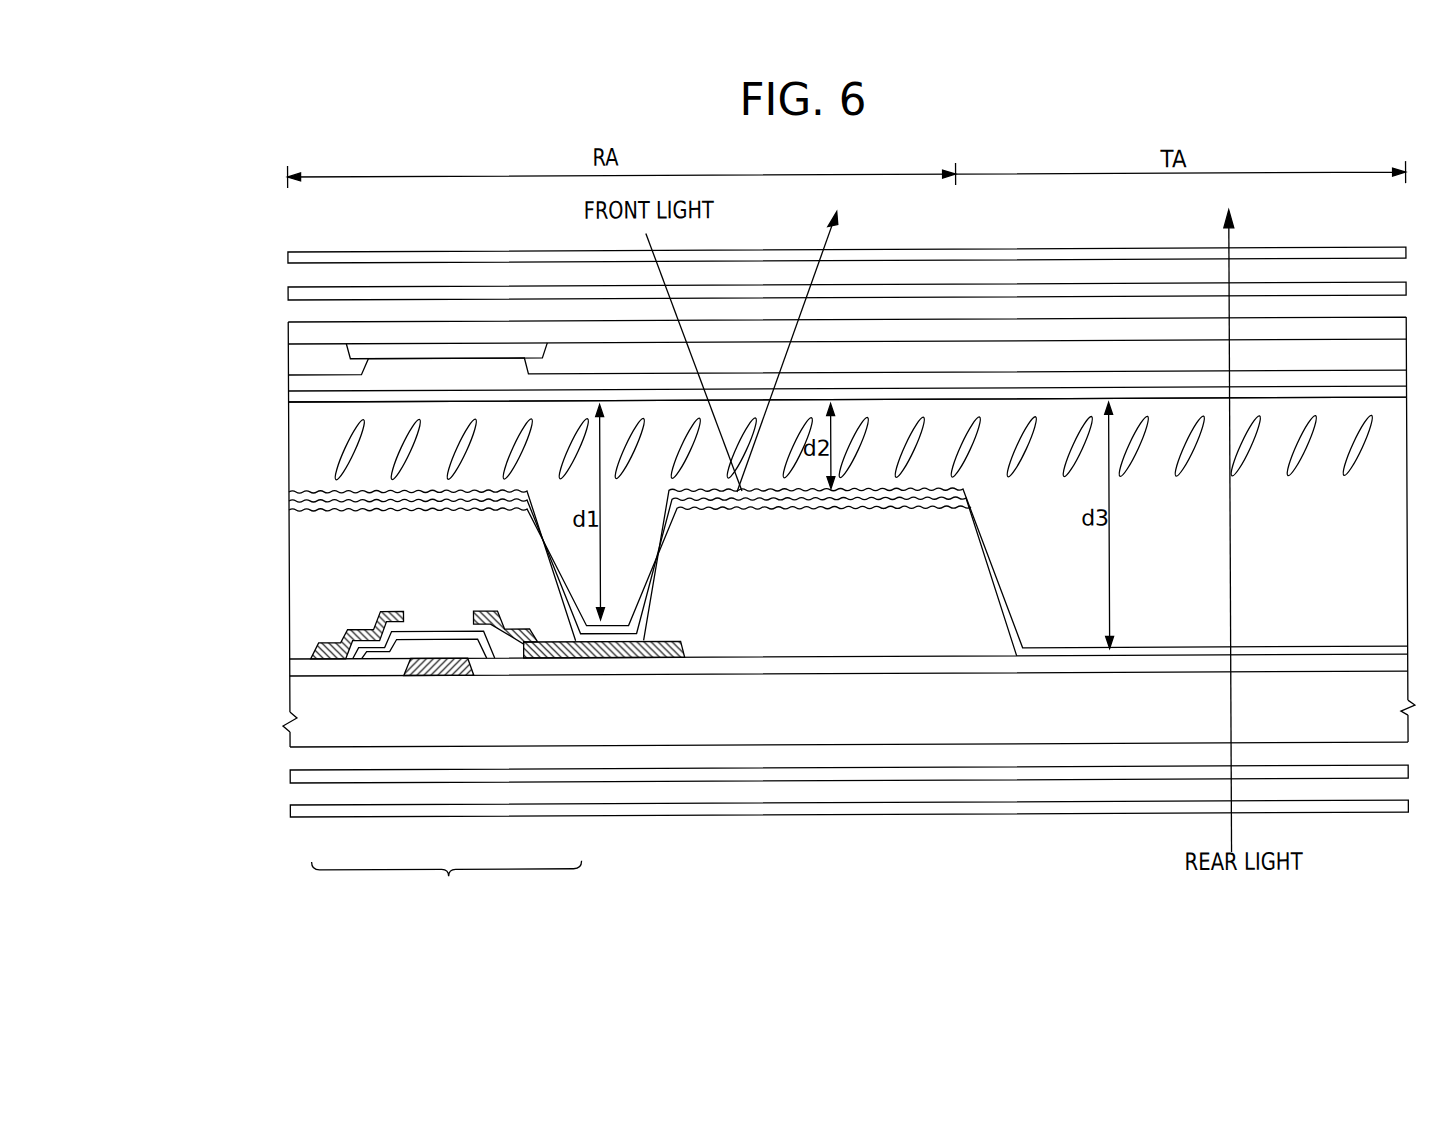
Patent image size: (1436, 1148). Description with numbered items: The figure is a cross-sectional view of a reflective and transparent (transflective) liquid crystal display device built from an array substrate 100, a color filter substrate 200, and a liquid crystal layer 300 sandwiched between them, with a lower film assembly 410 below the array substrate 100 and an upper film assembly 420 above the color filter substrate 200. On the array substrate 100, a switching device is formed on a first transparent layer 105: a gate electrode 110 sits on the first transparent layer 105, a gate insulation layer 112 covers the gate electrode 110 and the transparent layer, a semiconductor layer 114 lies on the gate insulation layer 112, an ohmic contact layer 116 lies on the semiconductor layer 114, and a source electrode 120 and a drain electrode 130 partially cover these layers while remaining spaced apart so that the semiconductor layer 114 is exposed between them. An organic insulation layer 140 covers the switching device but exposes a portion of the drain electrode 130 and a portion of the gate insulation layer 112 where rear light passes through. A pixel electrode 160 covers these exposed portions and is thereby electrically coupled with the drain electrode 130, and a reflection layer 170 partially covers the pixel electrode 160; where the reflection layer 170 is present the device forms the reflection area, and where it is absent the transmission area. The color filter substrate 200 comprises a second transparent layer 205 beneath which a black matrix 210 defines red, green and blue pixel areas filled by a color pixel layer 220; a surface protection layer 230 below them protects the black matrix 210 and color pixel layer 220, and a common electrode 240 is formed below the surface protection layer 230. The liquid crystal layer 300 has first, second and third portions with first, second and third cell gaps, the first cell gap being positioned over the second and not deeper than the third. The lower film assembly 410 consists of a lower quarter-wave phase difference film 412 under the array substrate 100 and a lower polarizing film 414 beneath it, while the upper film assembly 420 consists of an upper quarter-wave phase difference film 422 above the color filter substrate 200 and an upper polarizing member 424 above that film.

The array substrate 100 is at (222, 735).
The first transparent layer 105 is at (289, 729).
The gate electrode 110 is at (437, 673).
The gate insulation layer 112 is at (500, 644).
The semiconductor layer 114 is at (378, 660).
The ohmic contact layer 116 is at (358, 652).
The source electrode 120 is at (323, 662).
The drain electrode 130 is at (552, 649).
The organic insulation layer 140 is at (289, 589).
The pixel electrode 160 is at (289, 507).
The reflection layer 170 is at (292, 493).
The color filter substrate 200 is at (222, 422).
The second transparent layer 205 is at (289, 334).
The black matrix 210 is at (442, 352).
The color pixel layer 220 is at (289, 358).
The surface protection layer 230 is at (289, 384).
The common electrode 240 is at (289, 403).
The liquid crystal layer 300 is at (300, 444).
The lower film assembly 410 is at (222, 768).
The lower λ/4 phase difference film 412 is at (289, 777).
The lower polarizing film 414 is at (289, 812).
The upper film assembly 420 is at (222, 250).
The upper λ/4 phase difference film 422 is at (289, 293).
The upper polarizing member 424 is at (289, 257).